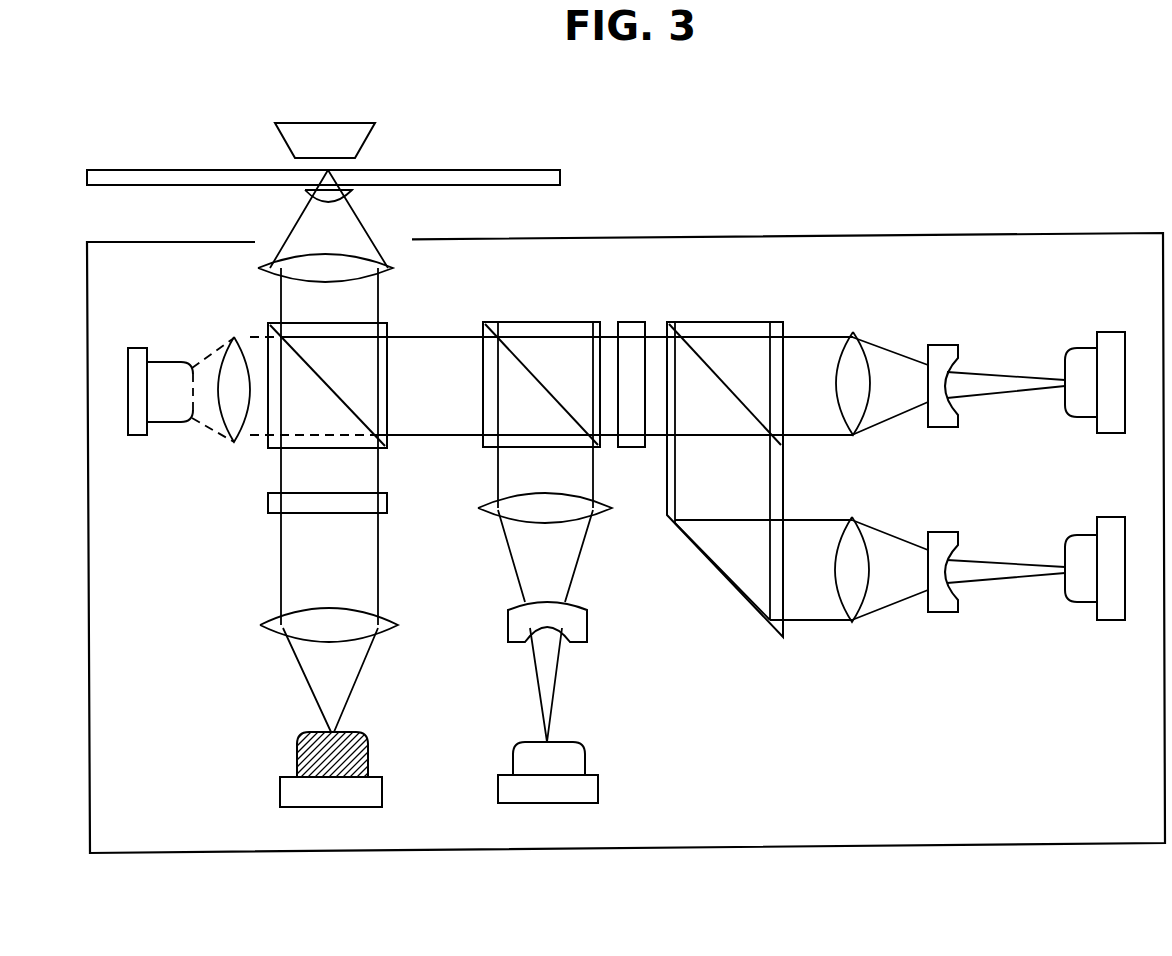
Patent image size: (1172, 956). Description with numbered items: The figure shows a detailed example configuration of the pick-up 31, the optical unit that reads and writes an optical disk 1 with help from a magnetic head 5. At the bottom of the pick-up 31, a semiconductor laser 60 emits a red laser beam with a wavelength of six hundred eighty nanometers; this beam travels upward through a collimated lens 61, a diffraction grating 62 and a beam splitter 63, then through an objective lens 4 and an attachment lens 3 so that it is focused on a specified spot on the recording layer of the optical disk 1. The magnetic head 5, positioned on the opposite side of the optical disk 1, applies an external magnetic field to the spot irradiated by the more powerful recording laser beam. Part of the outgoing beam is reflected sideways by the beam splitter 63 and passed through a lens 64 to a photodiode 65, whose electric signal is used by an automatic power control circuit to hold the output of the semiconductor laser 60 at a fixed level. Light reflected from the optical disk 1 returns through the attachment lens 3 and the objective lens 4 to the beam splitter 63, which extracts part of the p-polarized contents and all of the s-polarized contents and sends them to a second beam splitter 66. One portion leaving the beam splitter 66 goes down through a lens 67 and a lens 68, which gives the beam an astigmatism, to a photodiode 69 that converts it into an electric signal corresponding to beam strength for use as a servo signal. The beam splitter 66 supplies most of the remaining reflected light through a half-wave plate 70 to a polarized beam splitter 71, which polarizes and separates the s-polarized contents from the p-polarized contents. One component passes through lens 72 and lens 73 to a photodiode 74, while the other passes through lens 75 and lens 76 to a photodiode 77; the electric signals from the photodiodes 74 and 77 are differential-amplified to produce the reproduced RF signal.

The optical disk 1 is at (568, 173).
The attachment lens 3 is at (353, 199).
The objective lens 4 is at (270, 270).
The magnetic head 5 is at (295, 150).
The pick-up 31 is at (897, 845).
The semiconductor laser 60 is at (298, 757).
The collimated lens 61 is at (270, 623).
The diffraction grating 62 is at (273, 510).
The beam splitter 63 is at (387, 323).
The lens 64 is at (232, 362).
The photodiode 65 is at (173, 418).
The beam splitter 66 is at (537, 322).
The lens 67 is at (600, 515).
The lens 68 is at (585, 633).
The photodiode 69 is at (572, 762).
The half-wave plate 70 is at (635, 328).
The polarized beam splitter 71 is at (758, 605).
The lens 72 is at (853, 362).
The lens 73 is at (955, 345).
The photodiode 74 is at (1078, 397).
The lens 75 is at (853, 535).
The lens 76 is at (952, 533).
The photodiode 77 is at (1080, 588).